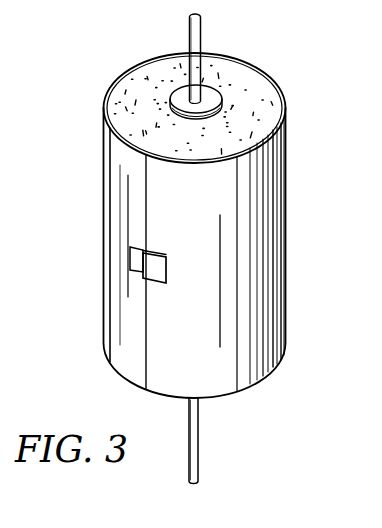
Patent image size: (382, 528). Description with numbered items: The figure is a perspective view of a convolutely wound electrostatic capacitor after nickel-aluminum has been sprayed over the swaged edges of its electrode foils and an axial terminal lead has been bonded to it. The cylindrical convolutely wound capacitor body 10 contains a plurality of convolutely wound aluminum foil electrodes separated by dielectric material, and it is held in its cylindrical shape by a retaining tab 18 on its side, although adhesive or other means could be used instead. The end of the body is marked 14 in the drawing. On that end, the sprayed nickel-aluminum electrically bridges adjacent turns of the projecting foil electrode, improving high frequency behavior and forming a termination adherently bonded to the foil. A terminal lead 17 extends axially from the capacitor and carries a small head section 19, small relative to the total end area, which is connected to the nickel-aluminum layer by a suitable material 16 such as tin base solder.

The convolutely wound capacitor body 10 is at (275, 185).
The end cap 14 is at (270, 110).
The suitable material 16 is at (172, 114).
The terminal lead 17 is at (200, 23).
The retaining tab 18 is at (153, 275).
The small head section 19 is at (180, 97).